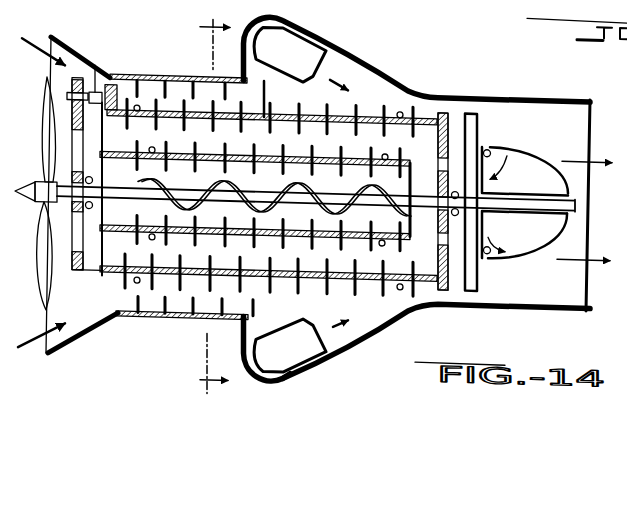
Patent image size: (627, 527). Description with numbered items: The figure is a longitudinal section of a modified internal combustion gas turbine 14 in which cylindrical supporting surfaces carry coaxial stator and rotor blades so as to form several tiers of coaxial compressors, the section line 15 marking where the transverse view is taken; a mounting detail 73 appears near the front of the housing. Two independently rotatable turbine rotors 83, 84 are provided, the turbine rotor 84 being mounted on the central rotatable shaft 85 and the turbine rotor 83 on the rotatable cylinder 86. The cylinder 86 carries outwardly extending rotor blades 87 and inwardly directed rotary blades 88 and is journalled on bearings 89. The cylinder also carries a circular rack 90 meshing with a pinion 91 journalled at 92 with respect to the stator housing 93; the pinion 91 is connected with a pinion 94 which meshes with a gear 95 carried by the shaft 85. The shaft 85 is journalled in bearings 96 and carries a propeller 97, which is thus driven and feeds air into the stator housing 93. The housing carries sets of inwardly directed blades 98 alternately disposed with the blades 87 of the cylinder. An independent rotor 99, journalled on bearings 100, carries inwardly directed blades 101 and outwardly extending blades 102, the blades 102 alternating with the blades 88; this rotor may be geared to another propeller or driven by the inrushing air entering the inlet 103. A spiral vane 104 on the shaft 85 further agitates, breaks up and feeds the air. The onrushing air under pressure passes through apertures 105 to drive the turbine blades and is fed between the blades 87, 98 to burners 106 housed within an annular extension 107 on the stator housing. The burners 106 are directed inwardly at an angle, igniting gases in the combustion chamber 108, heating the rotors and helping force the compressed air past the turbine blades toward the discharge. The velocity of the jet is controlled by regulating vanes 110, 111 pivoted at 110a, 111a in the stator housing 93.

The apparatus 14 is at (469, 12).
The section line 15 is at (187, 197).
The mounting bracket 73 is at (96, 70).
The turbine rotor 83 is at (450, 111).
The turbine rotor 84 is at (476, 109).
The central rotatable shaft 85 is at (113, 201).
The rotatable cylinder 86 is at (163, 114).
The rotor blades 87 is at (357, 106).
The rotary blades 88 is at (125, 130).
The bearings 89 is at (138, 287).
The circular rack 90 is at (110, 282).
The pinion 91 is at (115, 90).
The journal 92 is at (72, 113).
The stator housing 93 is at (132, 82).
The pinion 94 is at (78, 84).
The gear 95 is at (76, 278).
The bearings 96 is at (88, 213).
The propeller 97 is at (47, 230).
The inwardly directed blades 98 is at (158, 311).
The independent rotor 99 is at (407, 184).
The bearings 100 is at (153, 151).
The inwardly directed blades 101 is at (290, 183).
The outwardly extending blades 102 is at (255, 151).
The inlet 103 is at (47, 361).
The spiral vane 104 is at (370, 184).
The apertures 105 is at (431, 300).
The burners 106 is at (300, 53).
The annular extension 107 is at (252, 388).
The combustion chamber 108 is at (373, 328).
The regulating vane 110 is at (515, 161).
The pivot 110a is at (623, 76).
The regulating vane 111 is at (525, 236).
The pivot 111a is at (490, 250).